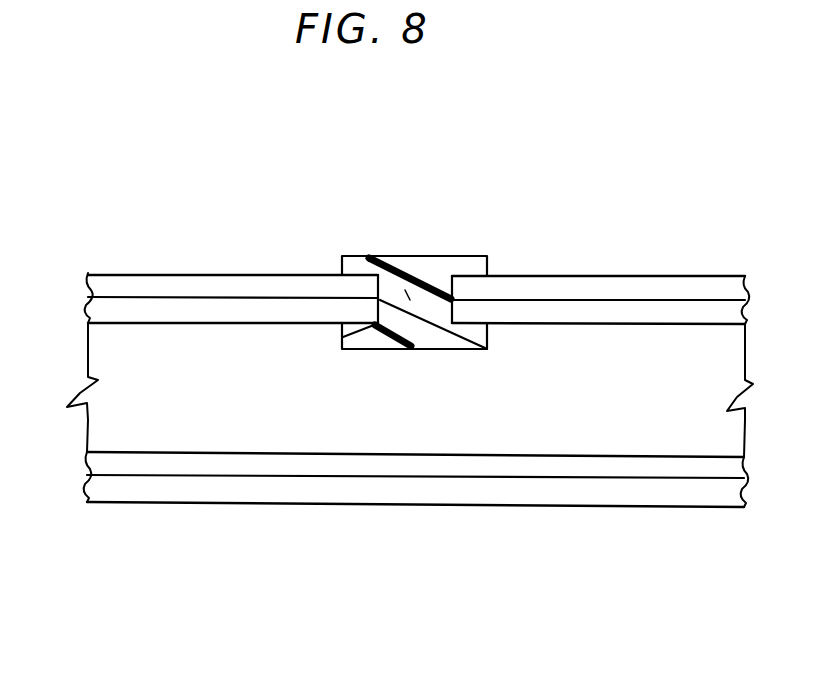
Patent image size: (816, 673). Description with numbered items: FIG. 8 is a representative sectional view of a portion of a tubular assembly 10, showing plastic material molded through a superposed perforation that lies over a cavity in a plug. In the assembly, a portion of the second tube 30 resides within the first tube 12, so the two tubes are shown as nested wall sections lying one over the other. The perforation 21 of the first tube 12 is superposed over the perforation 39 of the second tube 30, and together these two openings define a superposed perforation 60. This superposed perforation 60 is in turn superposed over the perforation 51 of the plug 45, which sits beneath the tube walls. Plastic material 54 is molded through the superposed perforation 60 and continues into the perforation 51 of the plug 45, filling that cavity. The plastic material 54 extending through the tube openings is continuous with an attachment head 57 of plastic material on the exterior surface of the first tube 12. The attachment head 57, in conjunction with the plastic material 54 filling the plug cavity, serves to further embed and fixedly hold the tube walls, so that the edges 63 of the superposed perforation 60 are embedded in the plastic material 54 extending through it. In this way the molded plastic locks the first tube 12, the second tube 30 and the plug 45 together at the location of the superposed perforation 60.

The tubular assembly 10 is at (309, 586).
The first tube 12 is at (202, 283).
The perforation of first tube 21 is at (408, 298).
The second tube 30 is at (228, 310).
The perforation of second tube 39 is at (425, 328).
The plug 45 is at (103, 359).
The perforation of plug 51 is at (452, 347).
The plastic material 54 is at (378, 340).
The attachment head 57 is at (486, 269).
The superposed perforation 60 is at (420, 278).
The edges of superposed perforation 63 is at (386, 262).